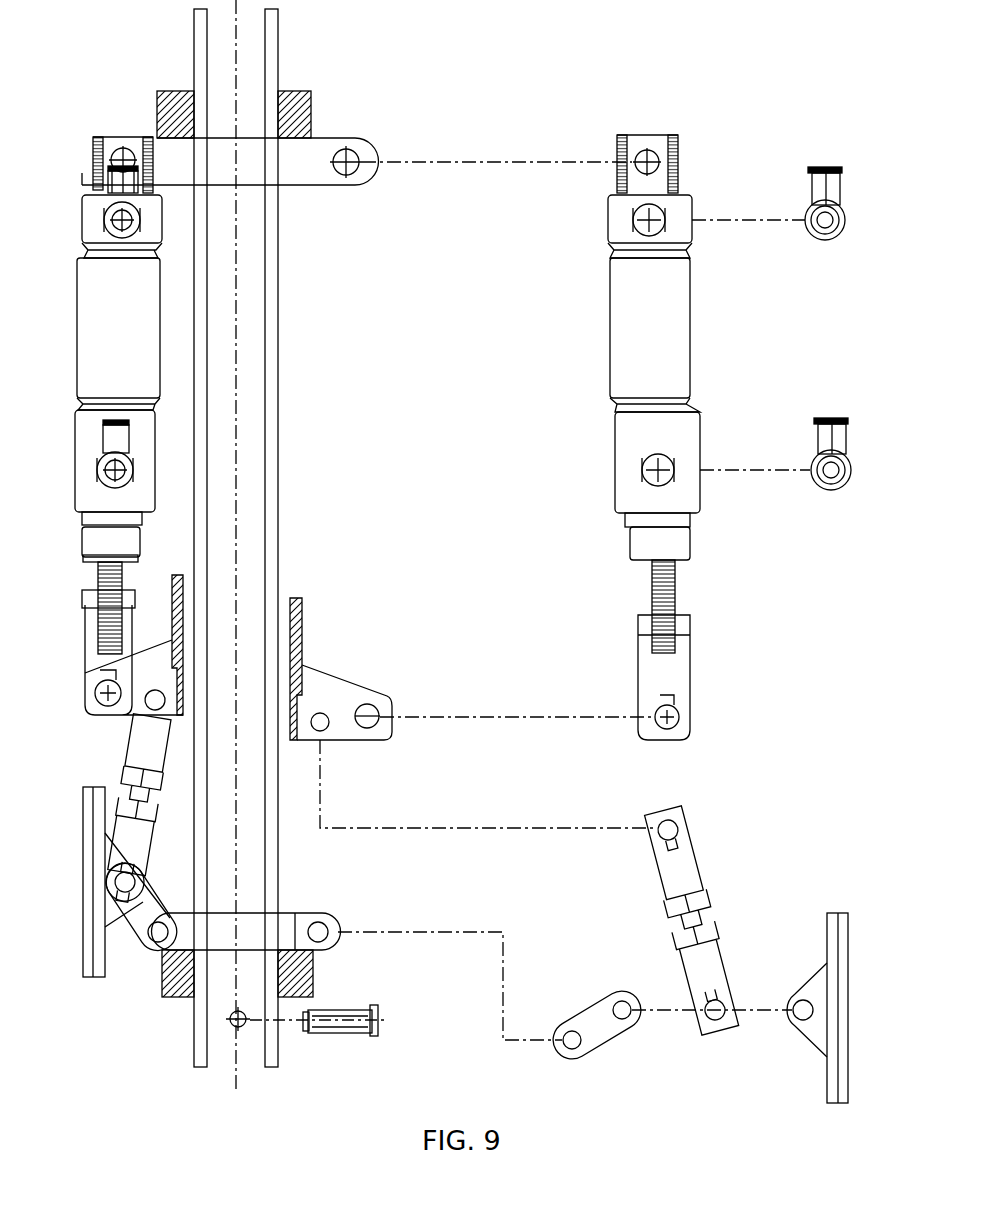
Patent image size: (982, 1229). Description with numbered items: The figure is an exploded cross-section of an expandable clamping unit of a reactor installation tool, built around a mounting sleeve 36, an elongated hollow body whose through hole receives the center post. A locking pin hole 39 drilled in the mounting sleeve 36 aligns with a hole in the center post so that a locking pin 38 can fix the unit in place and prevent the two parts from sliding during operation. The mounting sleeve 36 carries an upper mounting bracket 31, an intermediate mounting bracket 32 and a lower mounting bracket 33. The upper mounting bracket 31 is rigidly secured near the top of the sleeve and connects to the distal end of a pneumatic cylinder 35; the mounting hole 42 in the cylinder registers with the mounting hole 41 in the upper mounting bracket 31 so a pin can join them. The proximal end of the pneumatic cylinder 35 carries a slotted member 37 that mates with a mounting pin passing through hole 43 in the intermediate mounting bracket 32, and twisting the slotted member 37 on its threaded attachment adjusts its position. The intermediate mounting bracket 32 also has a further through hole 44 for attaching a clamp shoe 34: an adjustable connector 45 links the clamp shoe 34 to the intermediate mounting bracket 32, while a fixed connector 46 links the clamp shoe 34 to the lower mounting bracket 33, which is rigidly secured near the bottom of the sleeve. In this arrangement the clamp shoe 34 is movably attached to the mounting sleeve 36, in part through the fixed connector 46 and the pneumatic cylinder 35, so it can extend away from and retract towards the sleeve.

The upper mounting bracket 31 is at (311, 108).
The intermediate mounting bracket 32 is at (327, 682).
The lower mounting bracket 33 is at (303, 913).
The clamp shoe 34 is at (83, 878).
The pneumatic cylinder 35 is at (695, 340).
The mounting sleeve 36 is at (277, 37).
The slotted member 37 is at (687, 677).
The locking pin 38 is at (340, 1027).
The locking pin hole 39 is at (232, 1022).
The mounting hole 41 is at (348, 172).
The mounting hole 42 is at (647, 150).
The hole 43 is at (367, 708).
The bracket hole 44 is at (322, 729).
The adjustable connector 45 is at (695, 880).
The fixed connector 46 is at (610, 1038).